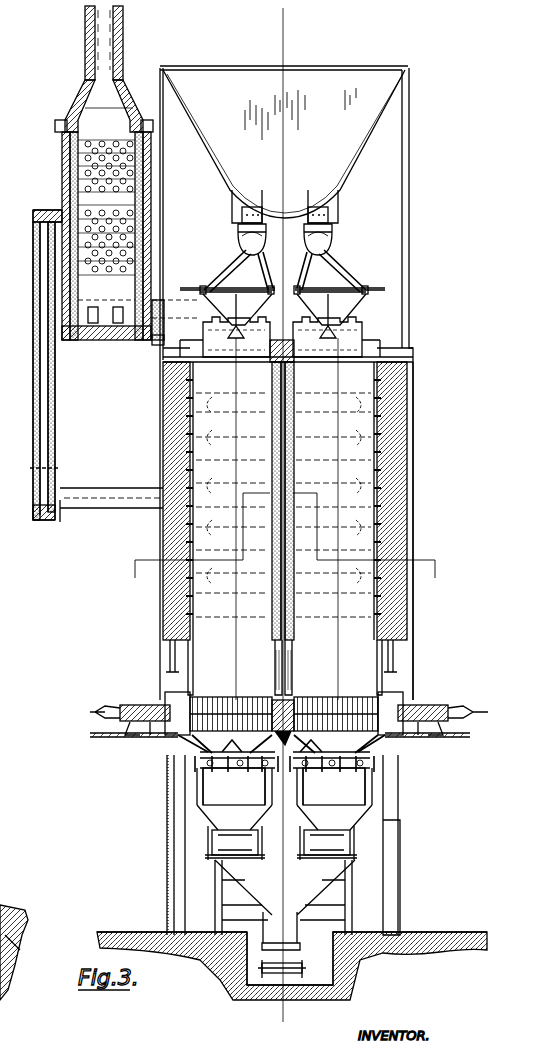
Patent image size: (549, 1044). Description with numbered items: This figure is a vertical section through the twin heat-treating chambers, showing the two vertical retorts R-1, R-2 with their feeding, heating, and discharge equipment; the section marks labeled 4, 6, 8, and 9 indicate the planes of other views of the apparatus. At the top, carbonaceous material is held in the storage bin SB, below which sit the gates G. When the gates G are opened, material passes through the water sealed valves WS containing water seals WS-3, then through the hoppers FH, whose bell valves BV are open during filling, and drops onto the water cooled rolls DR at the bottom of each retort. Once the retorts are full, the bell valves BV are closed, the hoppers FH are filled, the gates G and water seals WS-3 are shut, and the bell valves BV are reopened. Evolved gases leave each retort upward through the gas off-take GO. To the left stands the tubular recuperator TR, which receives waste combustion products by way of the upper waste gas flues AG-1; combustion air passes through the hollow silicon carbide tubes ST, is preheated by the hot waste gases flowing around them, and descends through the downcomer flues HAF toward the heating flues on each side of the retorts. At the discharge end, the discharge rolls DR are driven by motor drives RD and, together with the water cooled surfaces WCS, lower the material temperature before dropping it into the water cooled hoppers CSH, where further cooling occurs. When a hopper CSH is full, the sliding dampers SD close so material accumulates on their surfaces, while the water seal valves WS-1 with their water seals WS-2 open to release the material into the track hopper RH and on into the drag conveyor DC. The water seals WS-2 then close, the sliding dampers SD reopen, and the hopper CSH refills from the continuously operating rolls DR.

The tubular recuperator TR is at (62, 163).
The hollow silicon carbide tubes ST is at (135, 182).
The storage bin SB is at (284, 144).
The gates G is at (342, 216).
The water sealed valves WS is at (332, 242).
The water seals WS-3 is at (303, 266).
The hoppers FH is at (356, 313).
The gas off-take GO is at (181, 323).
The upper waste gas flues AG-1 is at (158, 342).
The bell valves BV is at (340, 338).
The downcomer flues HAF is at (50, 428).
The retort R-2 is at (215, 501).
The retort R-1 is at (354, 531).
The water cooled surfaces WCS is at (370, 668).
The motor drives RD is at (404, 704).
The discharge rolls DR is at (348, 700).
The sliding dampers SD is at (365, 750).
The water cooled hoppers CSH is at (284, 799).
The water seals WS-2 is at (213, 830).
The water seal valves WS-1 is at (320, 840).
The track hopper RH is at (285, 905).
The drag conveyor DC is at (297, 962).
The section line 4- 4 is at (283, 30).
The section line 6- 6 is at (438, 574).
The central partition wall 8 is at (280, 637).
The section line 9- 9 is at (360, 372).